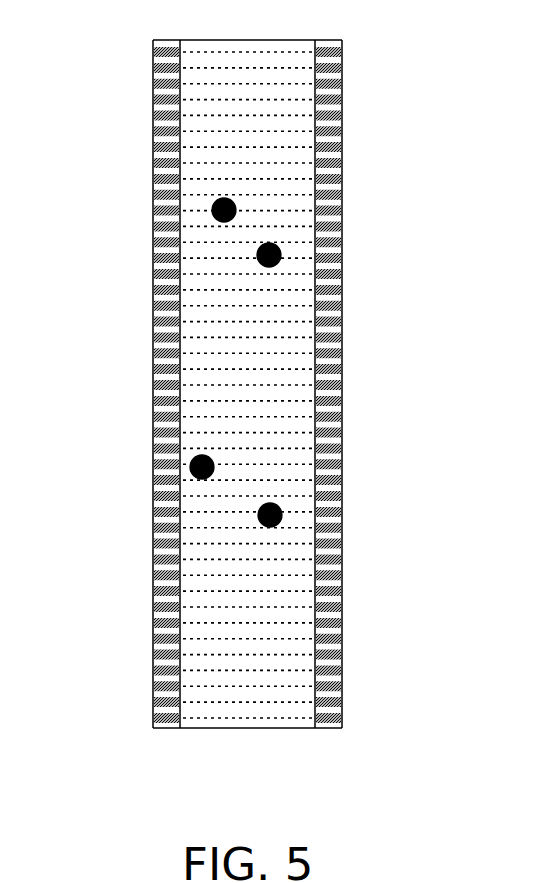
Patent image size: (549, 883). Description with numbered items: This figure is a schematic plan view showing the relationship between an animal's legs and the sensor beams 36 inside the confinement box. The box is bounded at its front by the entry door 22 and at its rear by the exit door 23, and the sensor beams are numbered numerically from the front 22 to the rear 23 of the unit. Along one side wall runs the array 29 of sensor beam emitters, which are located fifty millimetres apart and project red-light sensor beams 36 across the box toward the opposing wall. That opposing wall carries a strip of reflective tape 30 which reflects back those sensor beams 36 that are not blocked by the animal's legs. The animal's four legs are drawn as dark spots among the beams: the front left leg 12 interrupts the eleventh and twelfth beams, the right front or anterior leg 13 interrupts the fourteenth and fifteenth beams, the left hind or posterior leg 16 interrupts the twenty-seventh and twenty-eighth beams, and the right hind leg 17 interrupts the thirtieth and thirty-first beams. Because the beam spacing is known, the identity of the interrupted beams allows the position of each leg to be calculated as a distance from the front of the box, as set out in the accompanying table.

The entry door 22 is at (382, 75).
The array of sensor beams 29 is at (342, 152).
The strip of reflective tape 30 is at (130, 265).
The sensor beams 36 is at (283, 323).
The exit door 23 is at (275, 718).
The front left leg 12 is at (222, 185).
The right front leg 13 is at (287, 240).
The left hind leg 16 is at (205, 440).
The right hind leg 17 is at (272, 490).